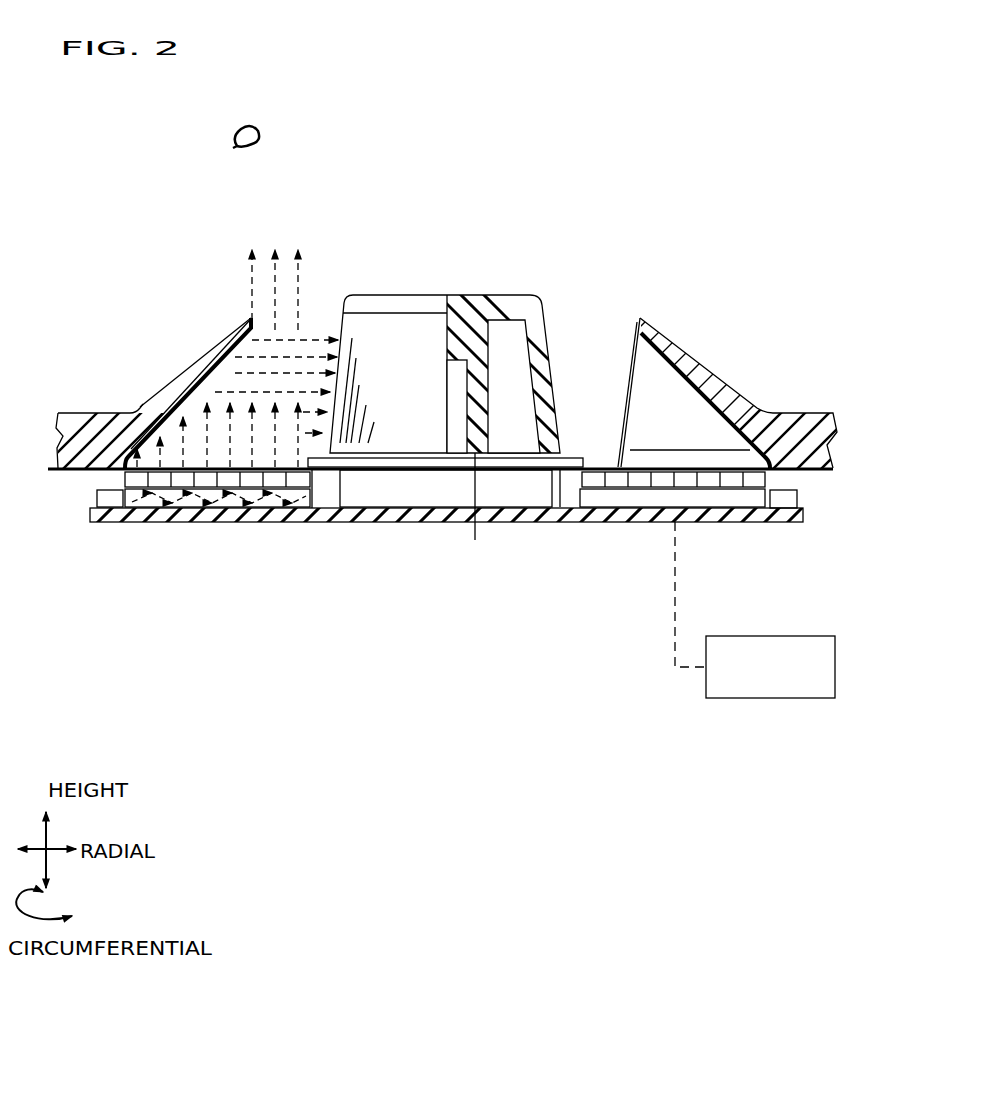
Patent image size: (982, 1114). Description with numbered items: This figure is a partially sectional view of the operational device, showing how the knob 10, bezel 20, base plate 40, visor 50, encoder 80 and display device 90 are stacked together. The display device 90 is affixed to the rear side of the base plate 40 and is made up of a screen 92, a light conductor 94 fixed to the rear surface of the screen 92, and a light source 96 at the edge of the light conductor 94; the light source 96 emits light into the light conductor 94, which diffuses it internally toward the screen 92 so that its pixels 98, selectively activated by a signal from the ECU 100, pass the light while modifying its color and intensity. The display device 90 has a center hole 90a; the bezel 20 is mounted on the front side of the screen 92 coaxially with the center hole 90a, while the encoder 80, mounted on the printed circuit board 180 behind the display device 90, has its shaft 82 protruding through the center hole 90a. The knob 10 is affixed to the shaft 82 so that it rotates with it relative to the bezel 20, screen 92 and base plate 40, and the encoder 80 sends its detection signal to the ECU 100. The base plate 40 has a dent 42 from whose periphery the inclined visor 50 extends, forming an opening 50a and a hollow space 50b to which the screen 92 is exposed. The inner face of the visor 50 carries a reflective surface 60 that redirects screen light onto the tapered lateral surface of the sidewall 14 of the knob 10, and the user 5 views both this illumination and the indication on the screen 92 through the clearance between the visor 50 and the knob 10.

The user 5 is at (238, 135).
The knob 10 is at (472, 288).
The sidewall 14 is at (343, 327).
The bezel 20 is at (317, 470).
The base plate 40 is at (98, 408).
The dent 42 is at (698, 455).
The visor 50 is at (170, 352).
The opening 50a is at (653, 405).
The hollow space 50b is at (618, 392).
The reflective surface 60 is at (633, 343).
The encoder 80 is at (432, 510).
The shaft 82 is at (475, 540).
The display device 90 is at (812, 485).
The center hole 90a is at (331, 478).
The screen 92 is at (600, 516).
The light conductor 94 is at (683, 513).
The light source 96 is at (787, 520).
The pixels 98 is at (125, 479).
The ECU 100 is at (772, 636).
The printed circuit board 180 is at (110, 522).